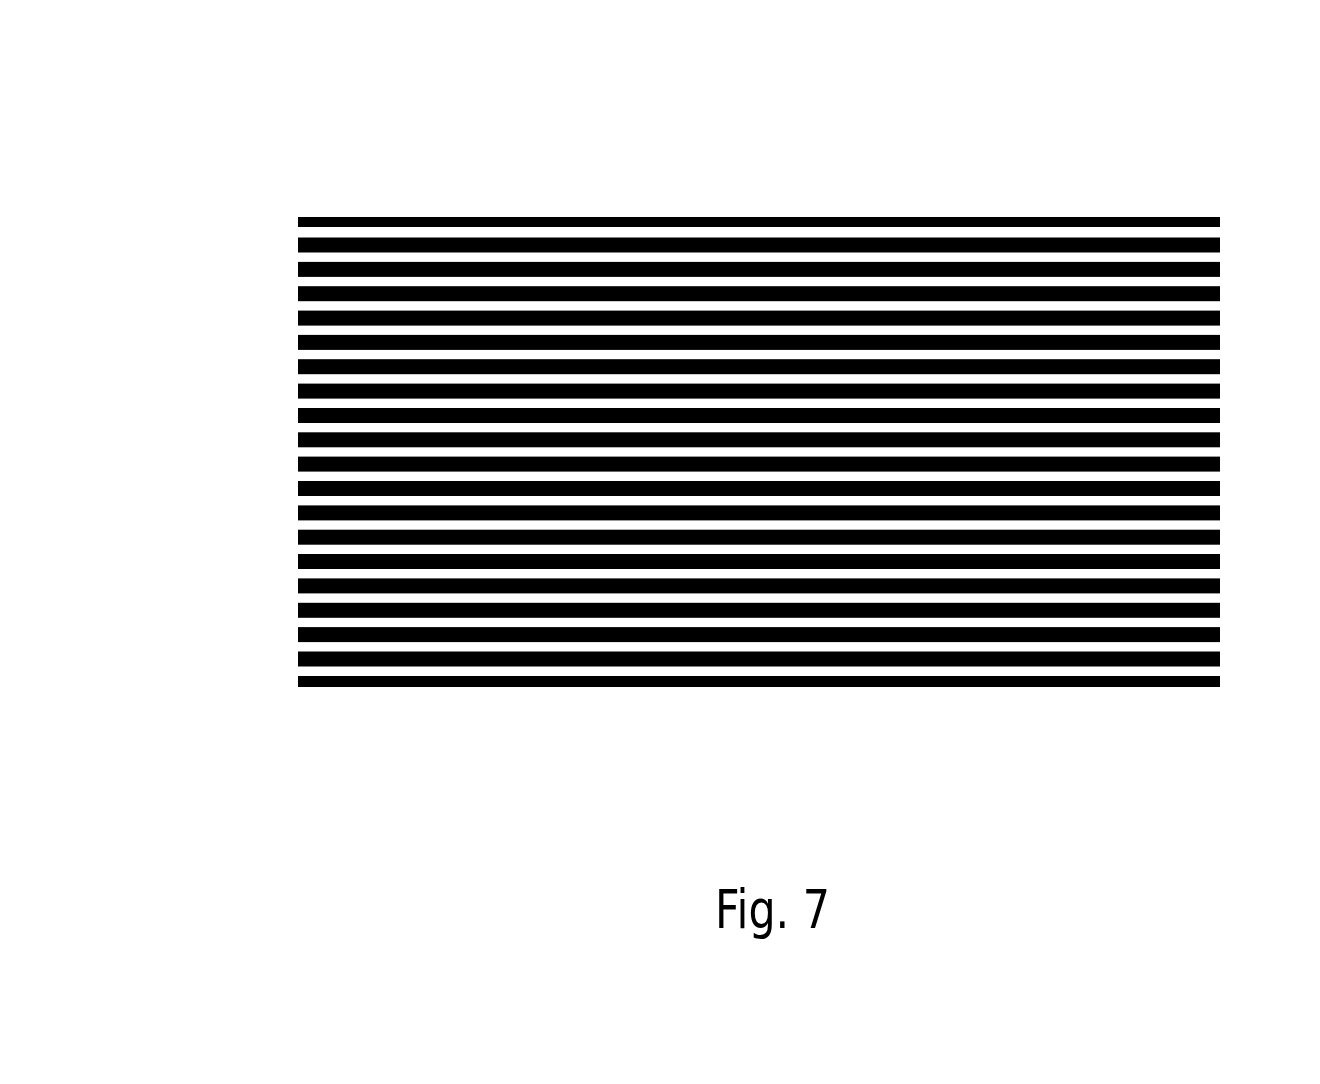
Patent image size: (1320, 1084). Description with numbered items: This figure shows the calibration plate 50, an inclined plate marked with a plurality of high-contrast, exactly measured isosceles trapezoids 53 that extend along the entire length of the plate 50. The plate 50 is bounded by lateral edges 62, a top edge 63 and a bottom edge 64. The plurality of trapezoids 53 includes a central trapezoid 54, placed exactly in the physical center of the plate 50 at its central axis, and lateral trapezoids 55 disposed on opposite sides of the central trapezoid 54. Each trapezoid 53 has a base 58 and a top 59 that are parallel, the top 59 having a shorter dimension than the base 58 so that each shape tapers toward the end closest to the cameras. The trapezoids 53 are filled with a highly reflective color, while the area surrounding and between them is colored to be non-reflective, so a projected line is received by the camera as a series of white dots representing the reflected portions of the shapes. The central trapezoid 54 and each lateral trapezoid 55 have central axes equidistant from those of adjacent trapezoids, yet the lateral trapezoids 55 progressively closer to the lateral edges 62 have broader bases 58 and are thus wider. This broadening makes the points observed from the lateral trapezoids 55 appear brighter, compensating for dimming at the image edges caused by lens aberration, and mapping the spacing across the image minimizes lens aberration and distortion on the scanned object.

The calibration plate 50 is at (240, 121).
The isosceles trapezoids 53 is at (1104, 258).
The central trapezoid 54 is at (1220, 448).
The lateral trapezoids 55 is at (297, 227).
The base 58 is at (1215, 645).
The top 59 is at (300, 677).
The lateral edges 62 is at (758, 210).
The top edge 63 is at (297, 221).
The bottom edge 64 is at (1220, 550).